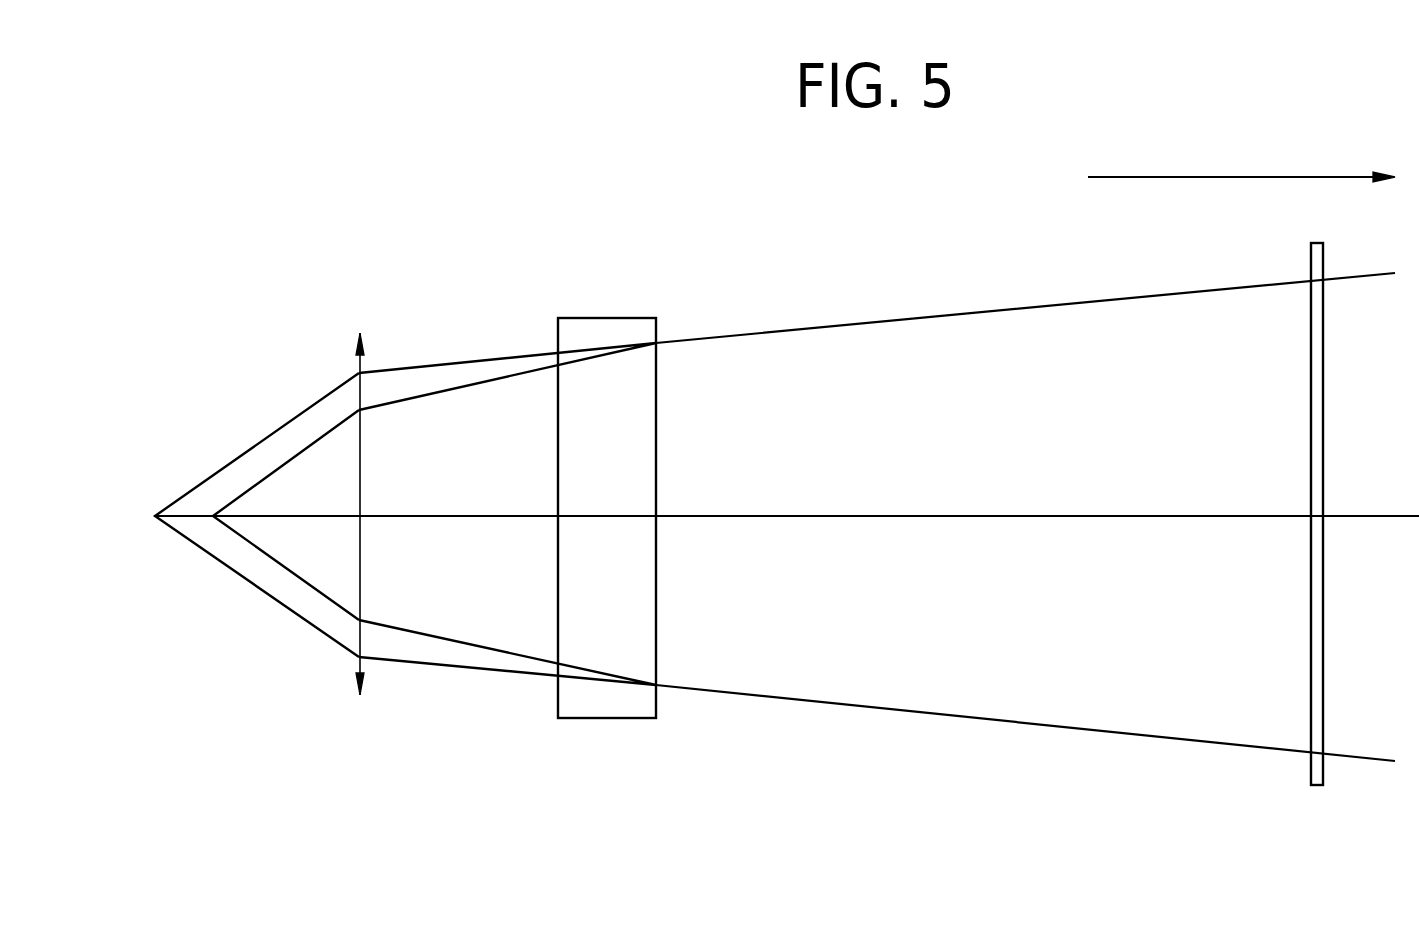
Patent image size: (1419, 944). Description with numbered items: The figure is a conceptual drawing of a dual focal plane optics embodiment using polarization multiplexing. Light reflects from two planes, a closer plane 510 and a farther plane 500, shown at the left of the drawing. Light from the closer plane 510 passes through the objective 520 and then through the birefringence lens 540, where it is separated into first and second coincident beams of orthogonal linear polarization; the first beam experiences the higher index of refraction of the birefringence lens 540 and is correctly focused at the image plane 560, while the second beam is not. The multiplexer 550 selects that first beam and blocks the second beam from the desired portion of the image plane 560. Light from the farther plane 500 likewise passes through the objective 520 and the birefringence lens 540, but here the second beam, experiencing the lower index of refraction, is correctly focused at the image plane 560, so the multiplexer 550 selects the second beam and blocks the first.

The farther plane 500 is at (155, 518).
The closer plane 510 is at (213, 518).
The objective 520 is at (362, 668).
The birefringence lens 540 is at (617, 718).
The multiplexer 550 is at (1310, 763).
The image plane 560 is at (1163, 177).